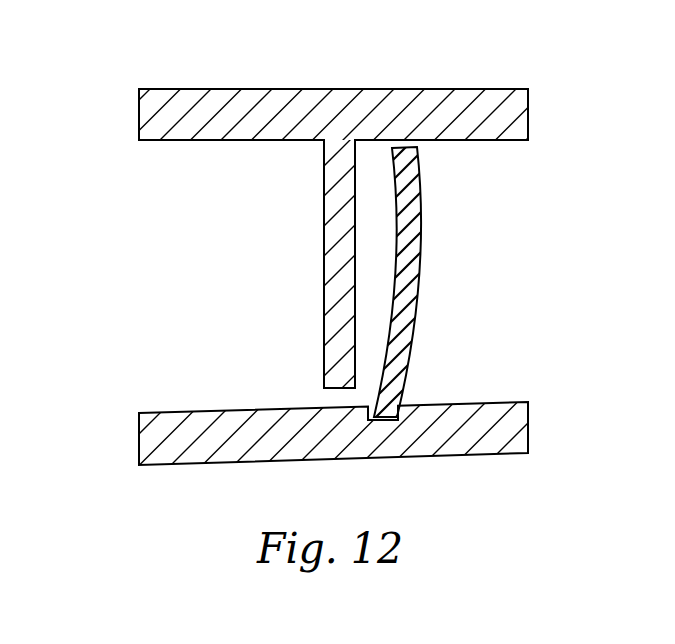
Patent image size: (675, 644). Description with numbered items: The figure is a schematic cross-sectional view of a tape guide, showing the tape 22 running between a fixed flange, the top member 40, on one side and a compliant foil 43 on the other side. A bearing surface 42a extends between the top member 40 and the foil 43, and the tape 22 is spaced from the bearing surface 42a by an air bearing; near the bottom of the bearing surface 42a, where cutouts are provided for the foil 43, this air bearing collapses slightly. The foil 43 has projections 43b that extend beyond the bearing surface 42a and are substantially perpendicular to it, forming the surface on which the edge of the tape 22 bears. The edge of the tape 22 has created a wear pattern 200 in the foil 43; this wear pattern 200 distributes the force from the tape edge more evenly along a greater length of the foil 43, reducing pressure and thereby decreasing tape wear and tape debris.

The top member 40 is at (498, 100).
The bearing surface 42a is at (357, 241).
The tape 22 is at (417, 278).
The foil 43 is at (137, 428).
The projections 43b is at (488, 447).
The wear pattern 200 is at (380, 421).